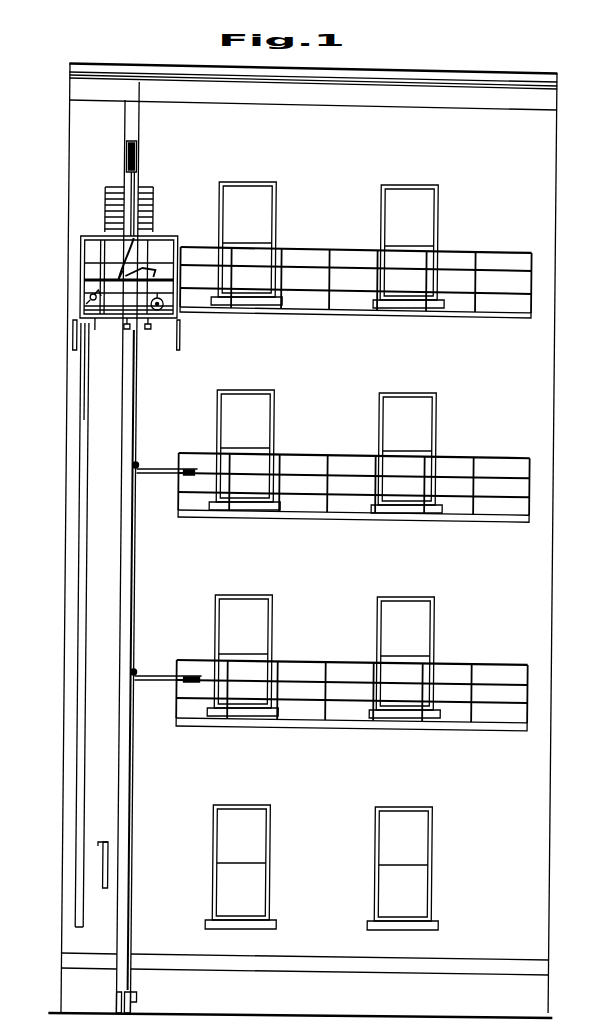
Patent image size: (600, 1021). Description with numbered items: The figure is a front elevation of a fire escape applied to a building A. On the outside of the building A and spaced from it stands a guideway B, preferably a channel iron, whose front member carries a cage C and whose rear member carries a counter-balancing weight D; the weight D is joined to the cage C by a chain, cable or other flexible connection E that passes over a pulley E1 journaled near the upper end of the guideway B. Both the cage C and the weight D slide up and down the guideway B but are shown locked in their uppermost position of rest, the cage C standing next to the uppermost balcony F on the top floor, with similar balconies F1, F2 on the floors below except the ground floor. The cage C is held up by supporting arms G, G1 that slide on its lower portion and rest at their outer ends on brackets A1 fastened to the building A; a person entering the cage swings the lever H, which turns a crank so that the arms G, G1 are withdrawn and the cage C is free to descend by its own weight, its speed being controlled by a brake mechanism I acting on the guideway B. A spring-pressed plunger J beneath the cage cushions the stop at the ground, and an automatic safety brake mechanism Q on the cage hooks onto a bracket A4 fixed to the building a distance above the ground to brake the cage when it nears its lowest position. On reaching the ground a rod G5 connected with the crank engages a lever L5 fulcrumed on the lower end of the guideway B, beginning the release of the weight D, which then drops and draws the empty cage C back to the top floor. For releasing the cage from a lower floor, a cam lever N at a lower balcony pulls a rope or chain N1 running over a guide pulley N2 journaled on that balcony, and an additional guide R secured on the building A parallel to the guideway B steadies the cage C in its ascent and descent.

The building A is at (69, 830).
The brackets A1 is at (76, 340).
The bracket A4 is at (96, 865).
The guideway B is at (141, 832).
The cage C is at (83, 270).
The counter-balancing weight D is at (107, 207).
The flexible connection E is at (137, 184).
The pulley E1 is at (137, 152).
The uppermost balcony F is at (328, 312).
The balcony F1 is at (332, 518).
The balcony F2 is at (320, 727).
The supporting arm G is at (164, 312).
The supporting arm G1 is at (110, 330).
The rod G5 is at (151, 330).
The lever H is at (148, 274).
The brake mechanism I is at (145, 260).
The plunger J is at (129, 331).
The cam lever N is at (194, 469).
The rope or chain N1 is at (141, 392).
The guide pulley N2 is at (141, 464).
The automatic safety brake mechanism Q is at (93, 300).
The additional guide R is at (83, 742).
The lever L5 is at (148, 994).